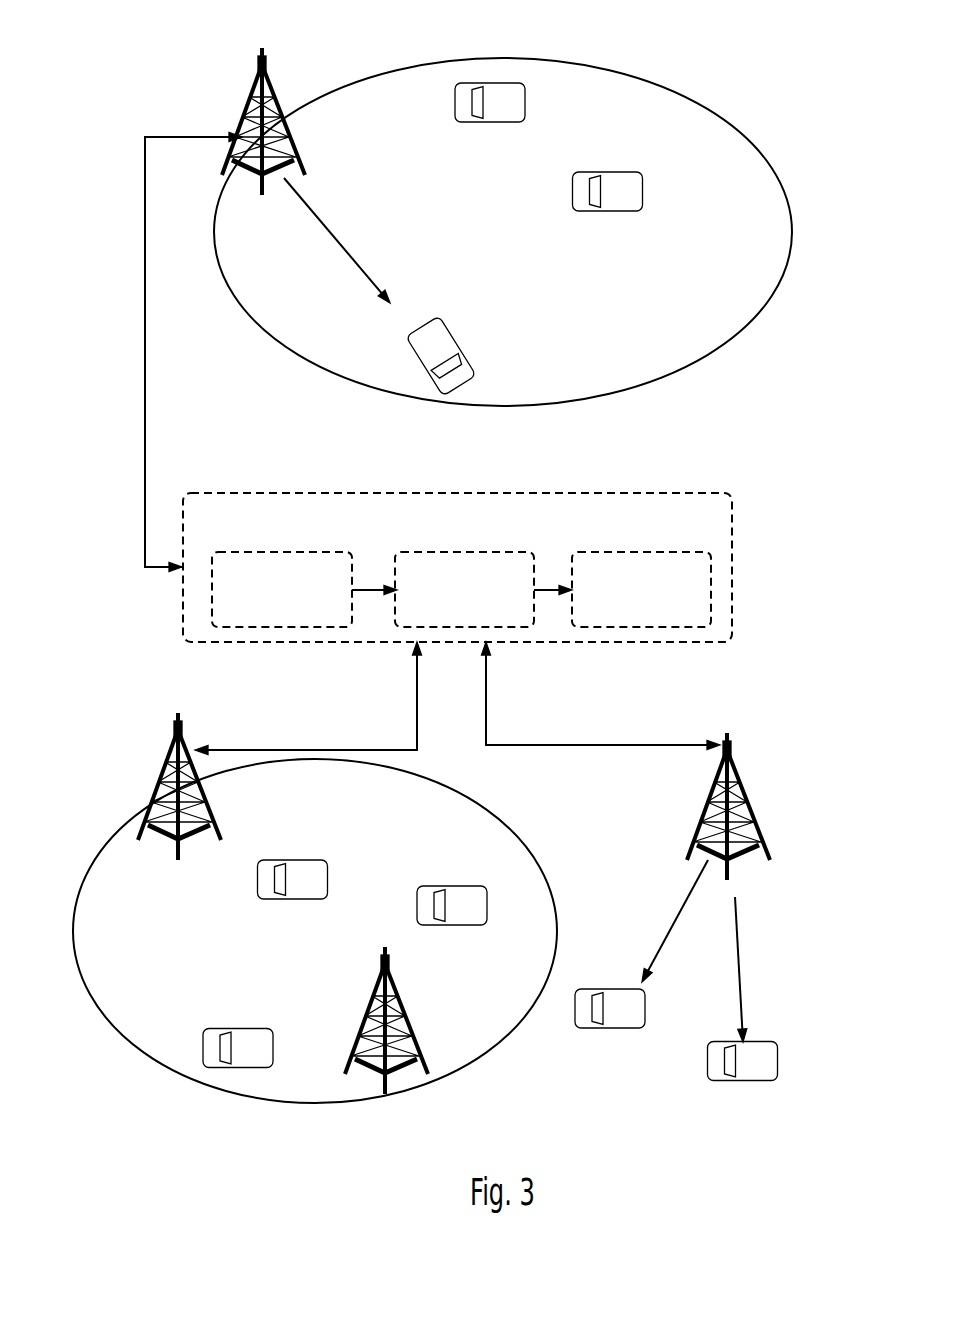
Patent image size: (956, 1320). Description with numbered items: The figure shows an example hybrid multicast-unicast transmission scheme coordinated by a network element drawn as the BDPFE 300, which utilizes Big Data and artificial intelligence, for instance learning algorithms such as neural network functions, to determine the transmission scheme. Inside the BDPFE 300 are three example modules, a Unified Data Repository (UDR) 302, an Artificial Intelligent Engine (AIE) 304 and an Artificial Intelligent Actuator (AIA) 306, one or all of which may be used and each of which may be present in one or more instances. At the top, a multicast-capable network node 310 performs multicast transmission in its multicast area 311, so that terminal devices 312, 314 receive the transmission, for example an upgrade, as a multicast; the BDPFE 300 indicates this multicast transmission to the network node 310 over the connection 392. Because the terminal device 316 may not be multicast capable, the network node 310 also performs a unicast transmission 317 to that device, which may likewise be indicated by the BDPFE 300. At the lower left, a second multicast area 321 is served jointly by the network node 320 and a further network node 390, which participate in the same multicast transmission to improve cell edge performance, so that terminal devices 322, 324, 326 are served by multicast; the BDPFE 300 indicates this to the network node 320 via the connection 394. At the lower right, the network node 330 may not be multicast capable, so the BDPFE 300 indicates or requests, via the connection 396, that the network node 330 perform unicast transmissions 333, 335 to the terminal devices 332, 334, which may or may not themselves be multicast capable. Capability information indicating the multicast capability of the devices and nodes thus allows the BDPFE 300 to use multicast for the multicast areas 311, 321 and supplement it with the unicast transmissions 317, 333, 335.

The BDPFE 300 is at (237, 538).
The Unified Data Repository (UDR) 302 is at (277, 607).
The Artificial Intelligent Engine (AIE) 304 is at (464, 605).
The Artificial Intelligent Actuator (AIA) 306 is at (640, 605).
The network node 310 is at (260, 66).
The multicast area 311 is at (707, 357).
The terminal device 312 is at (507, 90).
The terminal device 314 is at (625, 180).
The terminal device 316 is at (438, 330).
The unicast transmission 317 is at (337, 240).
The network node 320 is at (176, 733).
The multicast area 321 is at (243, 1097).
The terminal device 322 is at (305, 865).
The terminal device 324 is at (440, 890).
The terminal device 326 is at (255, 1037).
The network node 330 is at (724, 752).
The terminal device 332 is at (627, 997).
The unicast transmission 333 is at (675, 921).
The terminal device 334 is at (775, 1043).
The unicast transmission 335 is at (758, 969).
The network node 390 is at (397, 1077).
The connection 392 is at (172, 352).
The connection 394 is at (308, 698).
The connection 396 is at (601, 696).